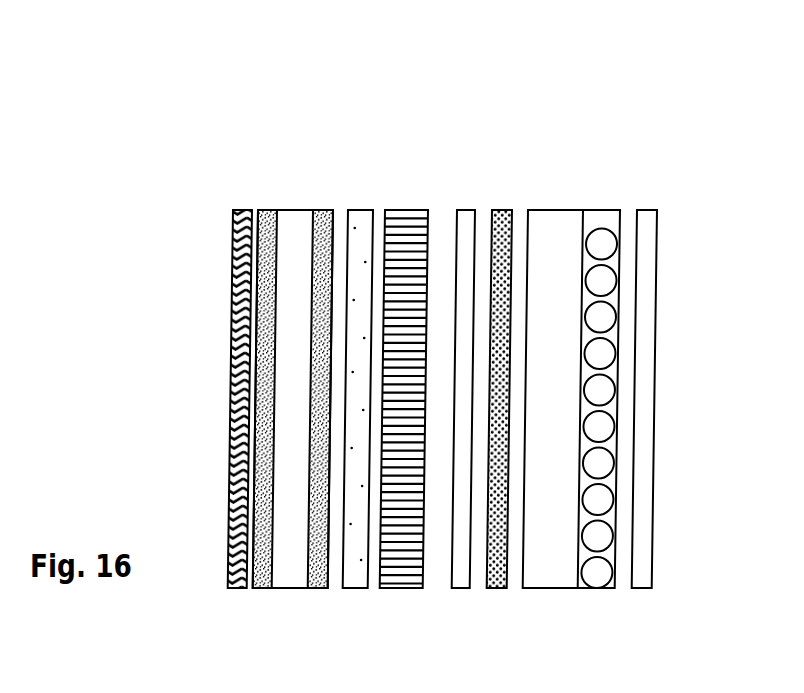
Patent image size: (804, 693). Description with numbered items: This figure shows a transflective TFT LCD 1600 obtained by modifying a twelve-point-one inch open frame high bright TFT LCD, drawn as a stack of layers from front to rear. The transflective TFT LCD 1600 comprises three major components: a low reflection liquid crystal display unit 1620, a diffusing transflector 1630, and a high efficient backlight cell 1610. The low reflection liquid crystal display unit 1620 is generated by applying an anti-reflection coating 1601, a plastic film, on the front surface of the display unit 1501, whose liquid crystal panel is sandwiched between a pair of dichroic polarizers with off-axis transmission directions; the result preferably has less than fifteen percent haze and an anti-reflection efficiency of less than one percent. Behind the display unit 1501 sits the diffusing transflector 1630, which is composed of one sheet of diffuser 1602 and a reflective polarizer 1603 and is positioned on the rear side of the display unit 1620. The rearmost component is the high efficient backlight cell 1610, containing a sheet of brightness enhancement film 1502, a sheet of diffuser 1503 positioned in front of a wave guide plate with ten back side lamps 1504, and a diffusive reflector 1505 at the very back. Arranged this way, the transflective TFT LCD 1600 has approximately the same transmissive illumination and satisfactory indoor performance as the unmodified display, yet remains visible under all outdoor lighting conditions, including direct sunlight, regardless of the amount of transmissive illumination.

The transflective TFT LCD 1600 is at (613, 607).
The low reflection liquid crystal display unit 1620 is at (228, 83).
The diffusing transflector 1630 is at (405, 83).
The high efficient backlight cell 1610 is at (702, 83).
The anti-reflection coating 1601 is at (235, 210).
The display unit 1501 is at (288, 210).
The diffuser 1602 is at (358, 210).
The reflective polarizer 1603 is at (403, 210).
The brightness enhancement film 1502 is at (462, 210).
The diffuser 1503 is at (510, 210).
The wave guide plate with ten back side lamps 1504 is at (563, 210).
The diffusive reflector 1505 is at (642, 210).